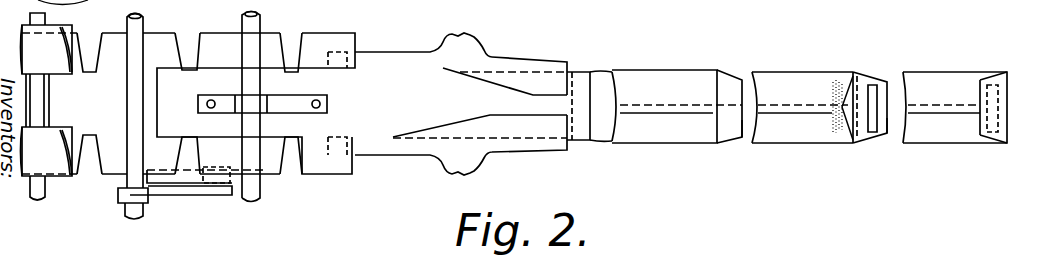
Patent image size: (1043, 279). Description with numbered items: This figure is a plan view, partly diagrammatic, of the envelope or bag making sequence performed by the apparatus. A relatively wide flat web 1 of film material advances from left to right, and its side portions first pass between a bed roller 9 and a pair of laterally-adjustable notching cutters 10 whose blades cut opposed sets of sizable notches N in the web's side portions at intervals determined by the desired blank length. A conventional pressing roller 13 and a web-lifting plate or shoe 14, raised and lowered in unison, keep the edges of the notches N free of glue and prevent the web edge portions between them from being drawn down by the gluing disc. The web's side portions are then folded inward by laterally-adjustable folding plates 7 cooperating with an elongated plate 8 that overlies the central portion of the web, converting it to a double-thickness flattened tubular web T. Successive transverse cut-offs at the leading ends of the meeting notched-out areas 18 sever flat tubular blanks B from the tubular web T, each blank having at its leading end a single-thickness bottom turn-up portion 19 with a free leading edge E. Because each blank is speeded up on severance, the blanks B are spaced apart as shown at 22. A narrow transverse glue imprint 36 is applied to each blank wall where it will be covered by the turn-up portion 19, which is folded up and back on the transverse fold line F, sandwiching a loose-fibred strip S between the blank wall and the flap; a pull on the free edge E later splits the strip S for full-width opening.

The web 1 is at (104, 116).
The notches N is at (92, 33).
The notching cutters 10 is at (49, 33).
The bed roller 9 is at (50, 95).
The pressing roller 13 is at (225, 176).
The web-lifting plate or shoe 14 is at (263, 183).
The folding plates 7 is at (465, 43).
The elongated plate 8 is at (437, 80).
The notched-out areas 18 is at (603, 72).
The flattened tubular web T is at (686, 75).
The bottom turn-up portion 19 is at (732, 80).
The spacing between blanks 22 is at (745, 143).
The flat tubular blanks B is at (790, 80).
The transverse fold line F is at (855, 97).
The transverse glue imprint 36 is at (838, 133).
The loose-fibred strips S is at (875, 133).
The leading edge E is at (975, 128).